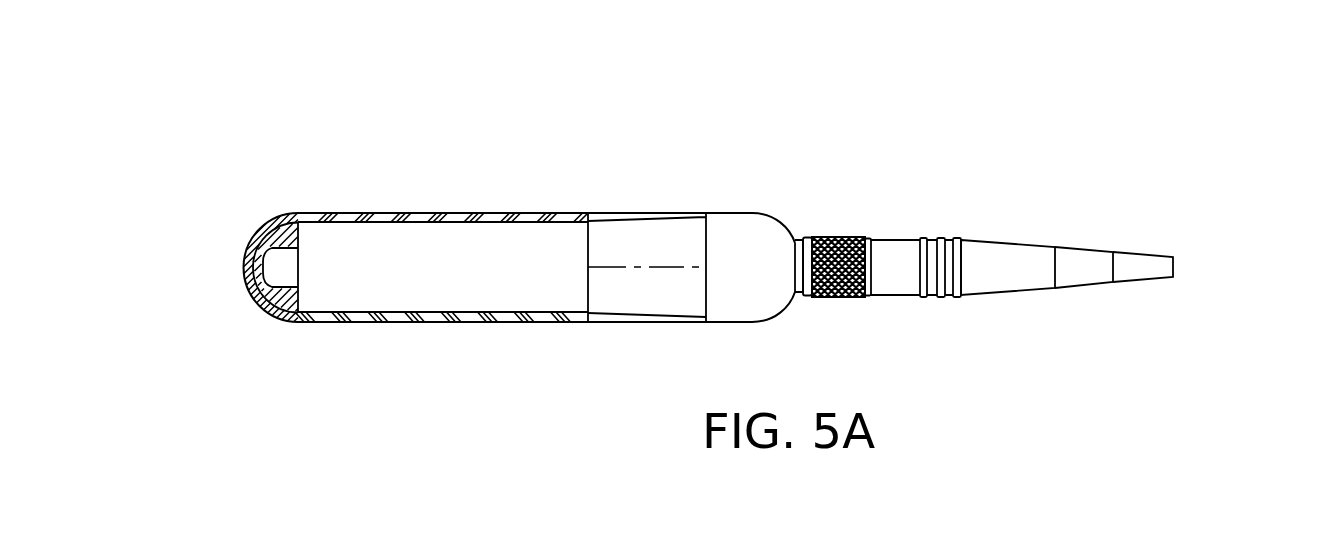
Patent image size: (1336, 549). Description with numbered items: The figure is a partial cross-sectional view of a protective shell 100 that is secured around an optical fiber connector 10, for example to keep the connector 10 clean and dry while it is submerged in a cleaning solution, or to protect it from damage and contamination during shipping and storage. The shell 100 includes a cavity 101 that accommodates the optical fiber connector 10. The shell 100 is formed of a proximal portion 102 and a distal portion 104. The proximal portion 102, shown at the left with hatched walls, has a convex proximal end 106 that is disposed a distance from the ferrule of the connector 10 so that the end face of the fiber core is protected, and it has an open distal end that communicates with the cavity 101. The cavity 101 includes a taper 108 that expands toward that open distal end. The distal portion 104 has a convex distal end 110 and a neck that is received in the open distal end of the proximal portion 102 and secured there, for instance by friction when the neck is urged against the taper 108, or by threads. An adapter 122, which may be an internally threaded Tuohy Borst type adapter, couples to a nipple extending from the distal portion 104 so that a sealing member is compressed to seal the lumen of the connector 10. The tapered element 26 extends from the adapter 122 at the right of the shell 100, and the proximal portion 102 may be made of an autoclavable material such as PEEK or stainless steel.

The protective shell 100 is at (660, 108).
The cavity 101 is at (383, 245).
The optical fiber connector 10 is at (515, 247).
The taper 108 is at (663, 217).
The distal portion 104 is at (753, 225).
The convex distal end 110 is at (775, 311).
The convex proximal end 106 is at (246, 256).
The proximal portion 102 is at (270, 318).
The adapter 122 is at (843, 237).
The cable strain relief 26 is at (1010, 240).